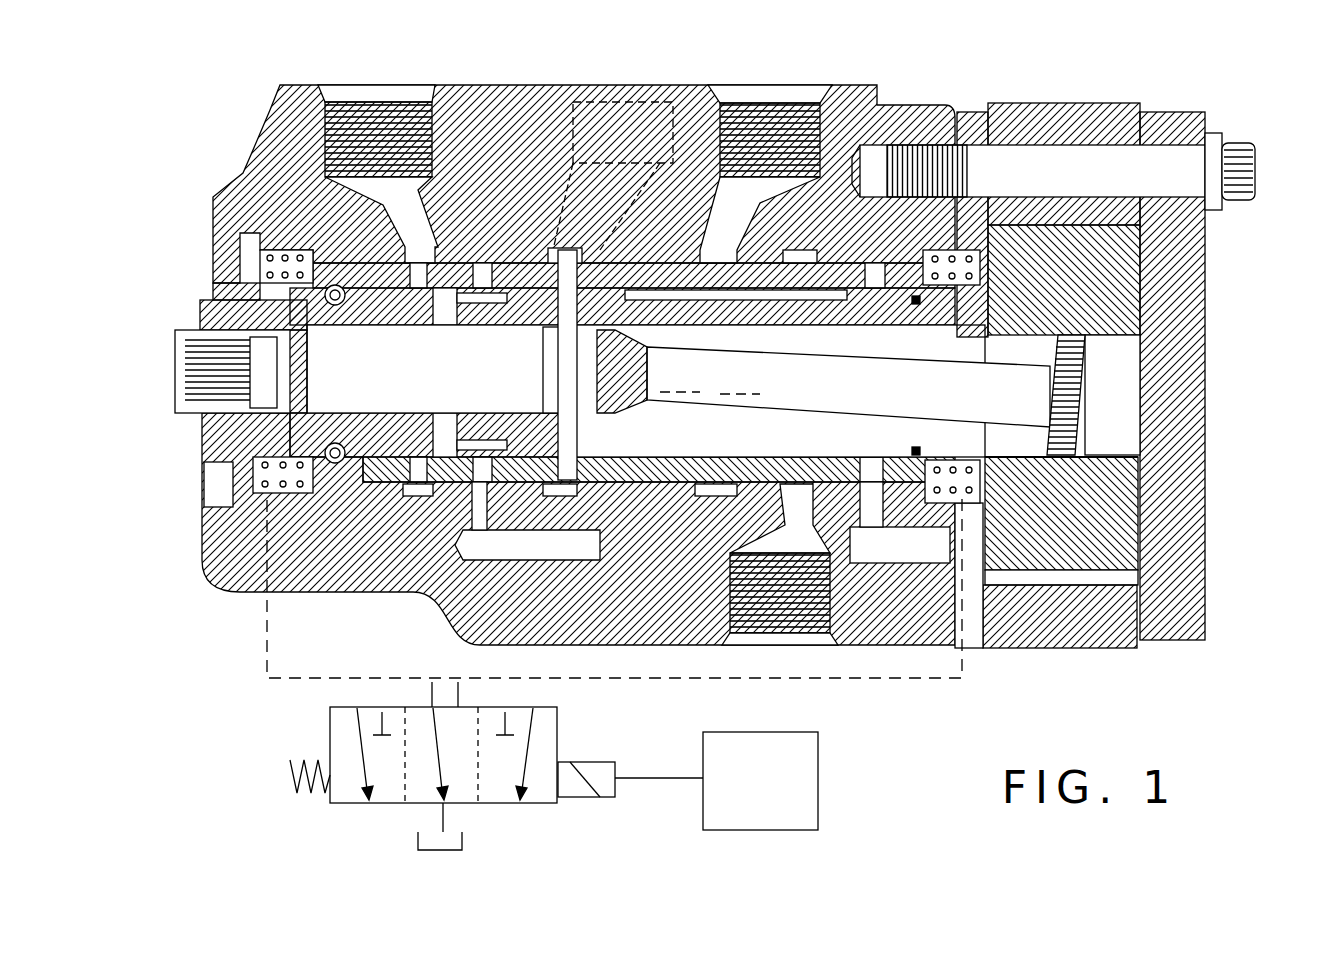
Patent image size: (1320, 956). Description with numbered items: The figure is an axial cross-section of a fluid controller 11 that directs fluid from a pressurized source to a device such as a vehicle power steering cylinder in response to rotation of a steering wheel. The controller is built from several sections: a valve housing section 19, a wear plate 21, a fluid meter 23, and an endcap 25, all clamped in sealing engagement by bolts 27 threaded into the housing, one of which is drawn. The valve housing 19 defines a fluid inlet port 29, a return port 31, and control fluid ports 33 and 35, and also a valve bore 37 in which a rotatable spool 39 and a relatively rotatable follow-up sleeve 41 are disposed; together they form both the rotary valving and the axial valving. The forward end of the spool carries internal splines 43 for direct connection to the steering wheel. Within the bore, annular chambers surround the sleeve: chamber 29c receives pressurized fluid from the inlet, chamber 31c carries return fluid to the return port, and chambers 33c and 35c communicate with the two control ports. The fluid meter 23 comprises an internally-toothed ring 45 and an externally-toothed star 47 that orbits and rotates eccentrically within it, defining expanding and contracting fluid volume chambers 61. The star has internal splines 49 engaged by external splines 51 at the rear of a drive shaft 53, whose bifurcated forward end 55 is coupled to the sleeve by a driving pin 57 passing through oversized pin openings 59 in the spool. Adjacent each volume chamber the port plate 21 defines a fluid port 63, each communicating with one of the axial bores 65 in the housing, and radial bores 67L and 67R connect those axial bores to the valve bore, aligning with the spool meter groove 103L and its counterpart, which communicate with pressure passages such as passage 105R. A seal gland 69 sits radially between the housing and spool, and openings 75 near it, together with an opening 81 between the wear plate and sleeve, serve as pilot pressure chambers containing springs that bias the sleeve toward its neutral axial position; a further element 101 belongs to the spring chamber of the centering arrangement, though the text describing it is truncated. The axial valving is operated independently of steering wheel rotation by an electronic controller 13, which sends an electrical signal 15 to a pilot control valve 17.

The fluid controller 11 is at (186, 128).
The electronic controller 13 is at (818, 778).
The electrical signal 15 is at (657, 778).
The pilot control valve 17 is at (330, 730).
The valve housing section 19 is at (283, 115).
The wear plate 21 is at (975, 125).
The fluid meter 23 is at (1042, 88).
The endcap 25 is at (1195, 360).
The bolts 27 is at (1240, 140).
The fluid inlet port 29 is at (805, 118).
The annular chamber 29c is at (705, 258).
The return port 31 is at (415, 118).
The annular chamber 31c is at (425, 232).
The control fluid port 33 is at (650, 125).
The annular chamber 33c is at (560, 256).
The control fluid port 35 is at (800, 627).
The annular chamber 35c is at (800, 255).
The valve bore 37 is at (355, 482).
The primary rotatable valve member 39 is at (830, 290).
The follow-up valve member 41 is at (690, 295).
The internal splines 43 is at (178, 355).
The internally-toothed ring member 45 is at (1018, 636).
The externally-toothed star member 47 is at (1120, 532).
The internal splines 49 is at (1098, 448).
The external splines 51 is at (1072, 335).
The drive shaft 53 is at (848, 387).
The bifurcated forward end 55 is at (548, 385).
The driving pin 57 is at (610, 373).
The oversized pin openings 59 is at (560, 300).
The fluid volume chambers 61 is at (1068, 580).
The fluid port 63 is at (988, 560).
The axial bores 65 is at (570, 540).
The radial bore 67L is at (460, 546).
The radial bore 67R is at (878, 512).
The seal gland 69 is at (204, 487).
The openings 75 is at (278, 250).
The opening 81 is at (985, 264).
The bore 101 is at (360, 326).
The annular meter groove 103L is at (482, 303).
The pressure passage 105R is at (745, 300).